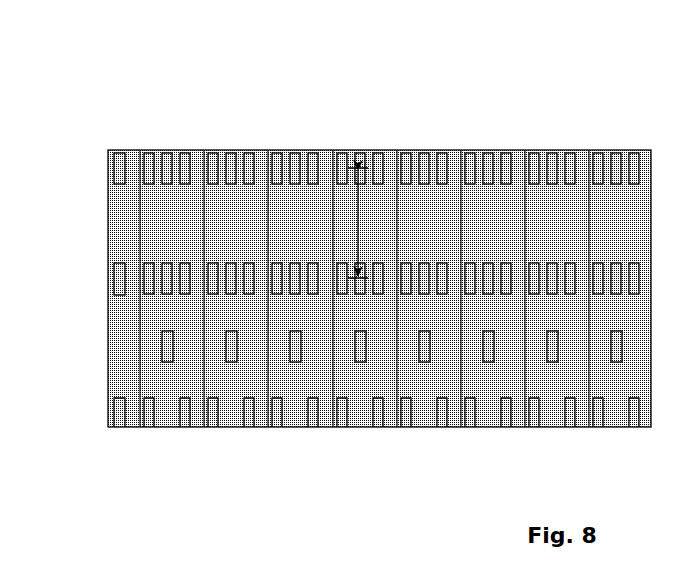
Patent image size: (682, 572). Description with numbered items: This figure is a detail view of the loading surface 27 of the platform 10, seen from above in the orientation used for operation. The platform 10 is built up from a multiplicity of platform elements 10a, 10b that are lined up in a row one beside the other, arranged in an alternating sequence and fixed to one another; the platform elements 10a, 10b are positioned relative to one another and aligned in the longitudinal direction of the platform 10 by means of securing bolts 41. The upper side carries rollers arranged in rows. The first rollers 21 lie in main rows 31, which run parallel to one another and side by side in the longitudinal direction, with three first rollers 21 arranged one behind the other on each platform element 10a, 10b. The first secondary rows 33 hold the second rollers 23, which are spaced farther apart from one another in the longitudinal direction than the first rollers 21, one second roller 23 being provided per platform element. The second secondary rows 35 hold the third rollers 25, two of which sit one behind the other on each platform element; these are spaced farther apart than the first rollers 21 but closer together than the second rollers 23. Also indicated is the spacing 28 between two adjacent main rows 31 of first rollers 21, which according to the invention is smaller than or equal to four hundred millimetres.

The platform 10 is at (262, 62).
The platform element 10a is at (166, 418).
The platform element 10b is at (232, 418).
The first roller 21 is at (118, 168).
The second roller 23 is at (166, 346).
The third roller 25 is at (118, 408).
The loading surface 27 is at (232, 220).
The spacing 28 is at (359, 185).
The main row 31 is at (582, 155).
The first secondary row 33 is at (557, 349).
The second secondary row 35 is at (603, 410).
The securing bolt 41 is at (263, 152).